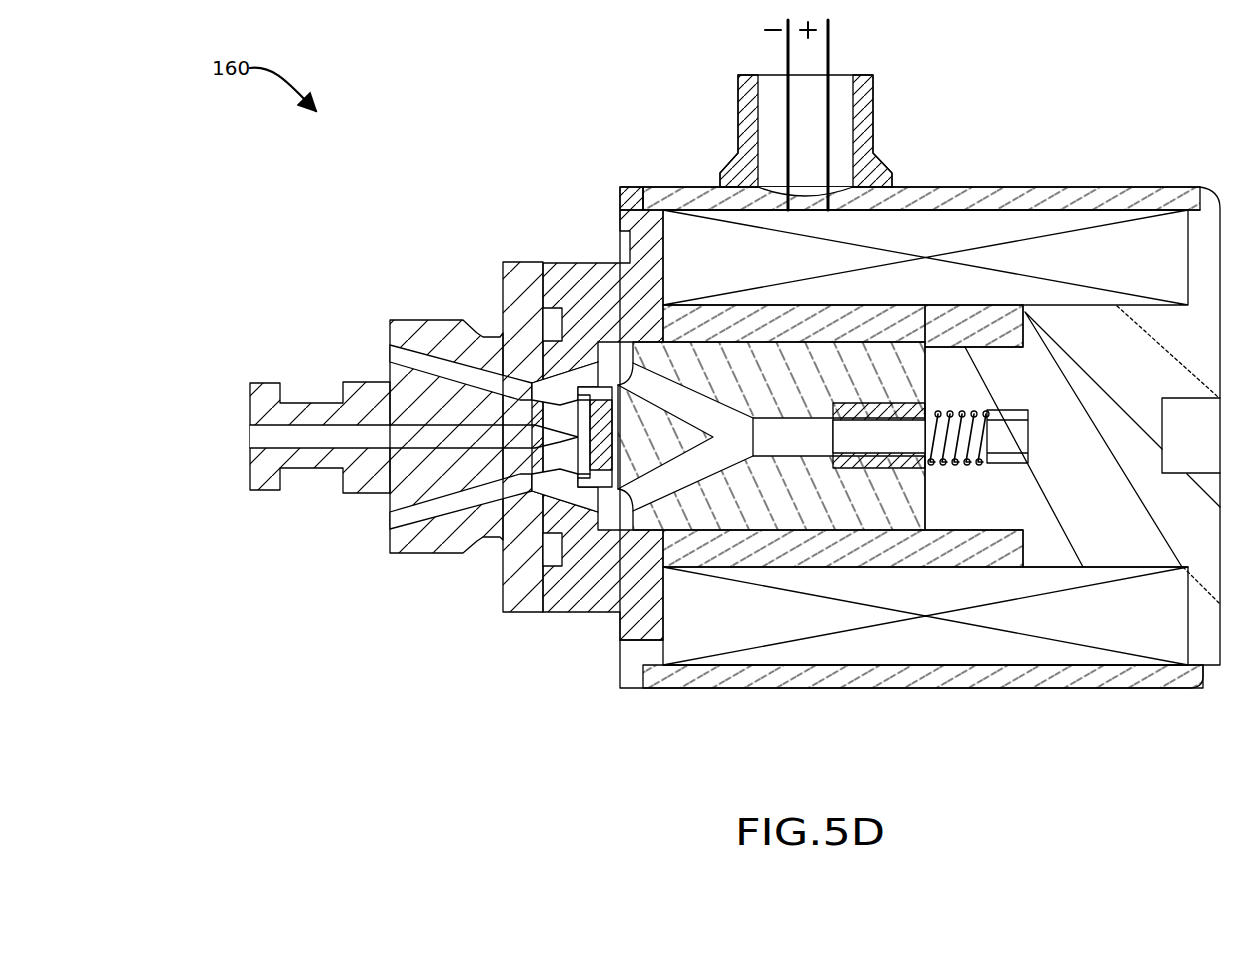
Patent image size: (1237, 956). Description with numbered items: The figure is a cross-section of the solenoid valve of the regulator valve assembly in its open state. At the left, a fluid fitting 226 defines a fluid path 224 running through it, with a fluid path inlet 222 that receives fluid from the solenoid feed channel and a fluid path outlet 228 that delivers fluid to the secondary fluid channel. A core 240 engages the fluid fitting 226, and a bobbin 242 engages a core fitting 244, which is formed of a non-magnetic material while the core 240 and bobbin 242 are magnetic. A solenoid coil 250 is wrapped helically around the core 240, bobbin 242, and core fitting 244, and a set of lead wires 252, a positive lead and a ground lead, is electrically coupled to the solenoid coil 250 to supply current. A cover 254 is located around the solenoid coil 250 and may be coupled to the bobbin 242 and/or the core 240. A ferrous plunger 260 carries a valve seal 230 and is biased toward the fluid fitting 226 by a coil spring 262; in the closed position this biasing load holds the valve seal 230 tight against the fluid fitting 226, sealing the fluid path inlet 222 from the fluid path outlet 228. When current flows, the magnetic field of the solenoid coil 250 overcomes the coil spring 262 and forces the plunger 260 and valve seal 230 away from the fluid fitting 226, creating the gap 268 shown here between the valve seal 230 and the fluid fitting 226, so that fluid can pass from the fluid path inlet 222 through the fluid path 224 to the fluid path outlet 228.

The fluid path inlet 222 is at (392, 520).
The fluid path 224 is at (312, 432).
The fluid fitting 226 is at (433, 340).
The fluid path outlet 228 is at (255, 430).
The valve seal 230 is at (604, 440).
The core 240 is at (601, 288).
The bobbin 242 is at (1123, 445).
The core fitting 244 is at (998, 320).
The solenoid coil 250 is at (936, 222).
The lead wires 252 is at (832, 48).
The cover 254 is at (1133, 185).
The plunger 260 is at (788, 390).
The coil spring 262 is at (977, 413).
The gap 268 is at (576, 410).